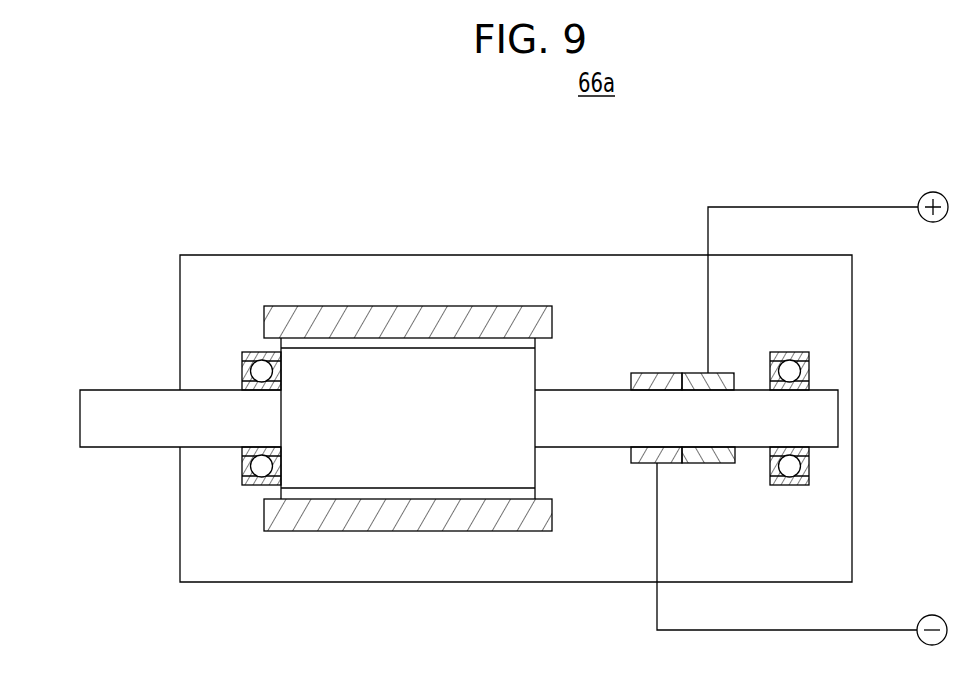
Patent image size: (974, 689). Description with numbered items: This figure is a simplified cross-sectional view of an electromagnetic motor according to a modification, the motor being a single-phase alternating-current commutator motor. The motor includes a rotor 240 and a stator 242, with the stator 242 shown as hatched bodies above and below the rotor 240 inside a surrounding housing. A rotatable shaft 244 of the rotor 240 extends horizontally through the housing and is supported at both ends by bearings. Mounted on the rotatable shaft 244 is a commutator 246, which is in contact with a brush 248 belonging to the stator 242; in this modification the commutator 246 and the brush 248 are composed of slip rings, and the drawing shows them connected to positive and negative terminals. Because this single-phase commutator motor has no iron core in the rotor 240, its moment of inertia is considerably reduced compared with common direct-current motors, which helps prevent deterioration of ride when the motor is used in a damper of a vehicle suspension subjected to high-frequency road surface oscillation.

The rotor 240 is at (382, 347).
The stator 242 is at (487, 305).
The rotatable shaft 244 is at (830, 417).
The commutator 246 is at (657, 388).
The brush 248 is at (693, 457).